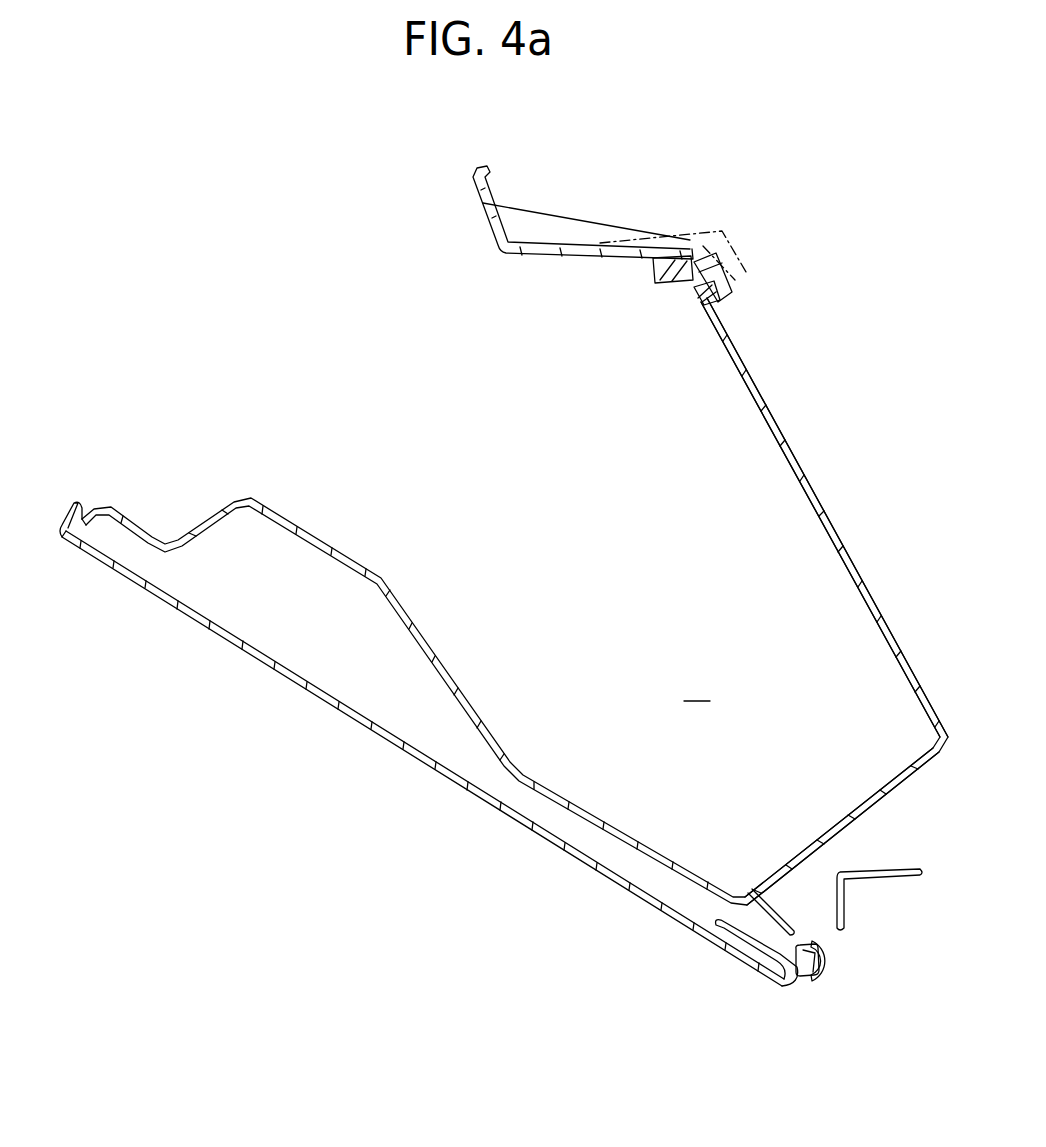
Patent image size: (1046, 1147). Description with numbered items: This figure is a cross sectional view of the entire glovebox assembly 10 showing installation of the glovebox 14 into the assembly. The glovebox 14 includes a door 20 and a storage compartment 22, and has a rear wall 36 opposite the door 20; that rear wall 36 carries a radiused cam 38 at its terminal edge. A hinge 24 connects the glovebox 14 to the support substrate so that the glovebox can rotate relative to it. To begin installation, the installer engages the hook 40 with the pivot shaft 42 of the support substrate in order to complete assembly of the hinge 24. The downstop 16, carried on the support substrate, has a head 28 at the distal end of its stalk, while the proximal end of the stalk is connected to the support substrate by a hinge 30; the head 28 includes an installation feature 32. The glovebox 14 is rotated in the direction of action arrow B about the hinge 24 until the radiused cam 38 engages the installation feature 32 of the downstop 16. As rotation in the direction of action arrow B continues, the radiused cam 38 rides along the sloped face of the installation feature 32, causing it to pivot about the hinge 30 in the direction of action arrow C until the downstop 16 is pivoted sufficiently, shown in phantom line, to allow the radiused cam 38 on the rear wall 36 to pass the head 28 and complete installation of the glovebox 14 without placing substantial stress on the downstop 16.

The glovebox assembly 10 is at (190, 292).
The glovebox 14 is at (887, 789).
The downstop 16 is at (722, 285).
The door 20 is at (420, 768).
The storage compartment 22 is at (699, 689).
The hinge 24 is at (830, 987).
The head 28 is at (725, 233).
The hinge 30 is at (557, 243).
The installation feature 32 is at (708, 295).
The rear wall 36 is at (827, 517).
The radiused cam 38 is at (695, 291).
The hook 40 is at (826, 950).
The pivot shaft 42 is at (803, 966).
The action arrow B is at (713, 970).
The action arrow C is at (640, 267).